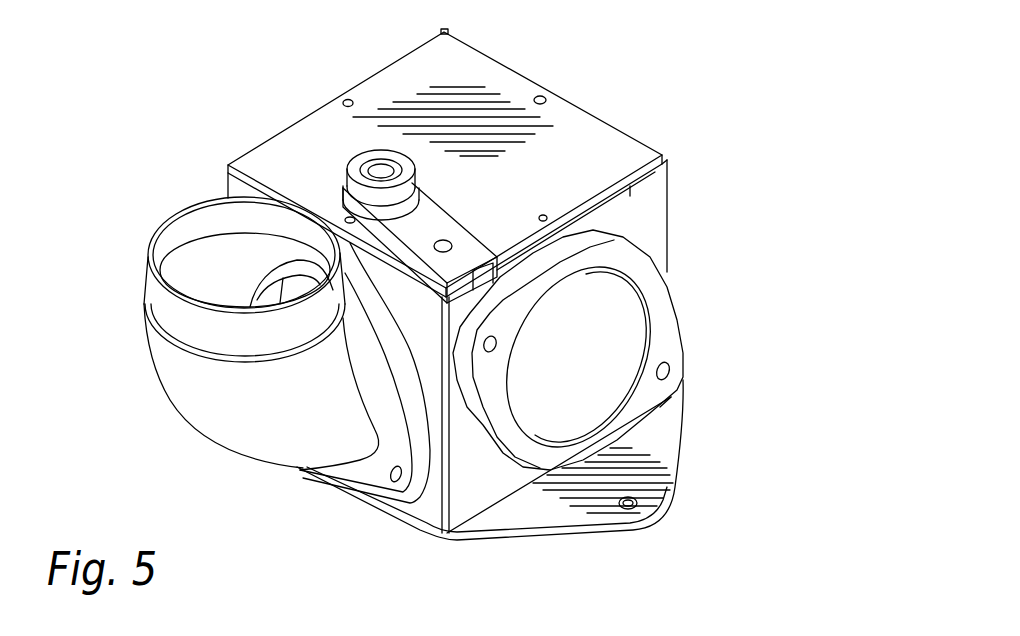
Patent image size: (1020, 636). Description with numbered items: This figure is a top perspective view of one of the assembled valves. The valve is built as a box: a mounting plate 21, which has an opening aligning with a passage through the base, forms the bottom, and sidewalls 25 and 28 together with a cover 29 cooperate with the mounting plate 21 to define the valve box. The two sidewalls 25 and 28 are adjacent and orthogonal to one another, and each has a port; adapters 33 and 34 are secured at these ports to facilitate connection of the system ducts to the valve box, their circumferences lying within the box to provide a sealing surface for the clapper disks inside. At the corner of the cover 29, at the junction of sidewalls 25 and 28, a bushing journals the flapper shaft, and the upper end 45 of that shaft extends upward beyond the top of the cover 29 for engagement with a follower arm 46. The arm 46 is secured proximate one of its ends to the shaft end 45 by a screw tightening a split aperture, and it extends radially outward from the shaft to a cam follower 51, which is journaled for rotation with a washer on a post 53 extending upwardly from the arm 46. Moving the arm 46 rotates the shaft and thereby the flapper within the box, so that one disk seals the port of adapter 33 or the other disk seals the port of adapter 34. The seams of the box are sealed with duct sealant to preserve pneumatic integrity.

The mounting plate 21 is at (645, 437).
The sidewall 25 is at (417, 503).
The sidewall 28 is at (655, 223).
The cover 29 is at (483, 80).
The adapter 33 is at (243, 420).
The adapter 34 is at (667, 317).
The upper end of the shaft 45 is at (445, 246).
The follower arm 46 is at (420, 227).
The cam follower 51 is at (352, 165).
The post 53 is at (373, 163).